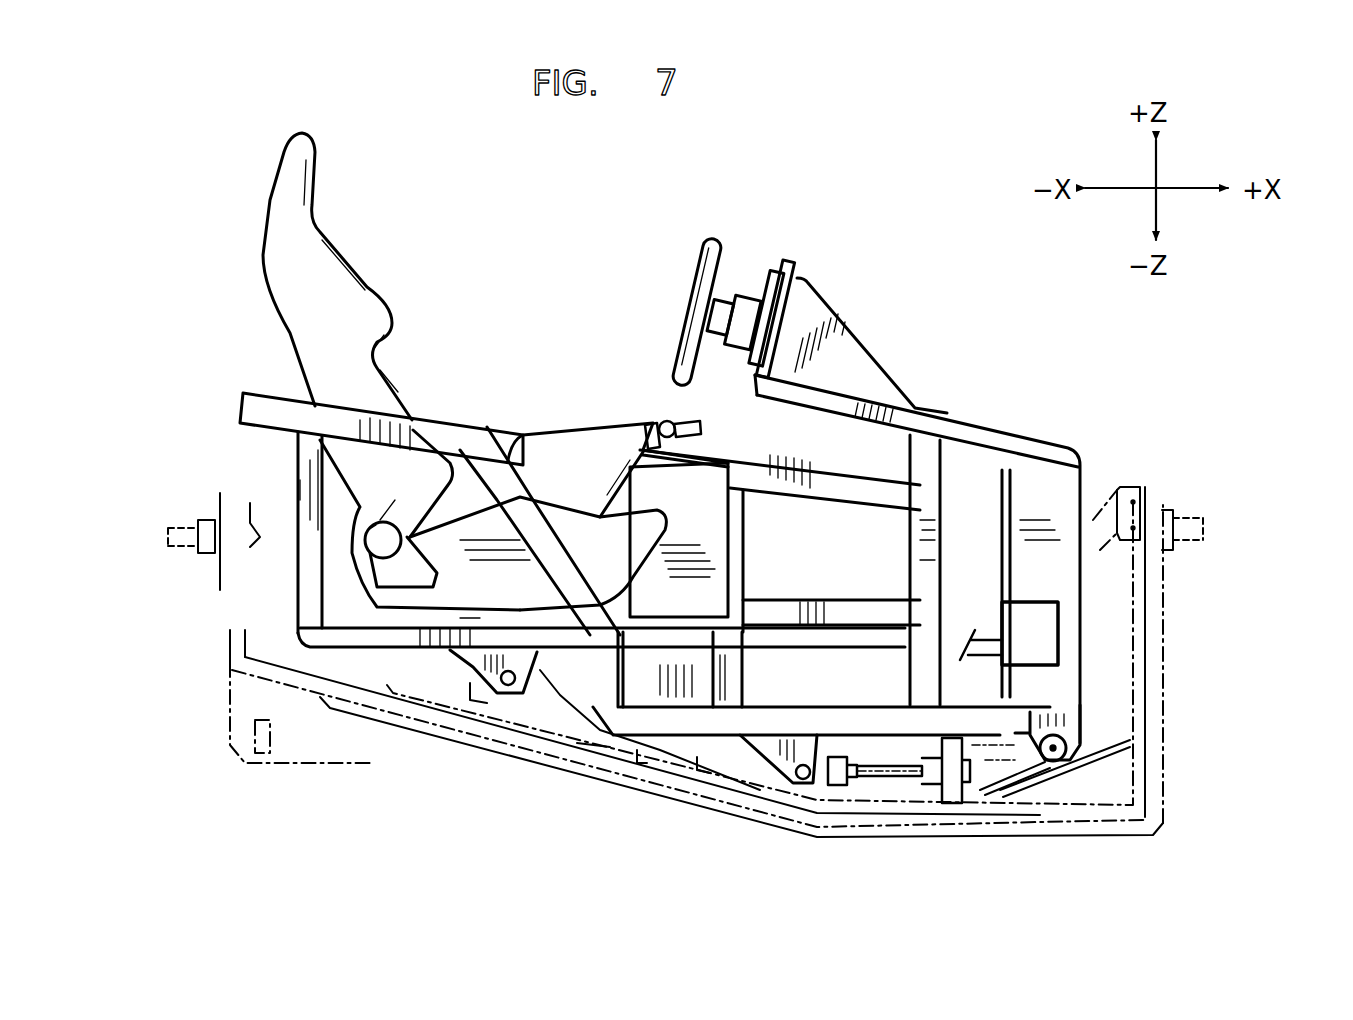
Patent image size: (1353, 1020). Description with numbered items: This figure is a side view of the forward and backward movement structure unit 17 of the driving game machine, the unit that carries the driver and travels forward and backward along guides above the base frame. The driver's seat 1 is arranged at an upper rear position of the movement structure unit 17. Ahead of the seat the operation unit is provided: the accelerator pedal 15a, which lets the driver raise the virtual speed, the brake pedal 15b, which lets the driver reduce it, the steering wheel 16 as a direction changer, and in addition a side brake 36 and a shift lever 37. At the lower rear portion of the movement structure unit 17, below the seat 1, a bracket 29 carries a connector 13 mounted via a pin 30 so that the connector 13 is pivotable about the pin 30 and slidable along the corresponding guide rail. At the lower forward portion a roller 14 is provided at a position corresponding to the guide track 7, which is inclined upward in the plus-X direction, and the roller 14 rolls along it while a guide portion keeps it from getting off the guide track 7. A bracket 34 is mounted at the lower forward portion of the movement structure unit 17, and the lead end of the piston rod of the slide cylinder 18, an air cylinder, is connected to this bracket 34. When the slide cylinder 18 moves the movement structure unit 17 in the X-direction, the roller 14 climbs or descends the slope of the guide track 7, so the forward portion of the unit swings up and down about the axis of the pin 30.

The driver's seat 1 is at (285, 143).
The guide track 7 is at (1093, 752).
The connector 13 is at (543, 673).
The roller 14 is at (1055, 760).
The accelerator pedal 15a is at (960, 636).
The brake pedal 15b is at (1030, 633).
The steering wheel 16 is at (712, 243).
The forward and backward movement structure unit 17 is at (968, 358).
The slide cylinder 18 is at (945, 795).
The bracket 29 is at (470, 683).
The pin 30 is at (510, 687).
The bracket 34 is at (773, 750).
The side brake 36 is at (583, 425).
The shift lever 37 is at (663, 418).